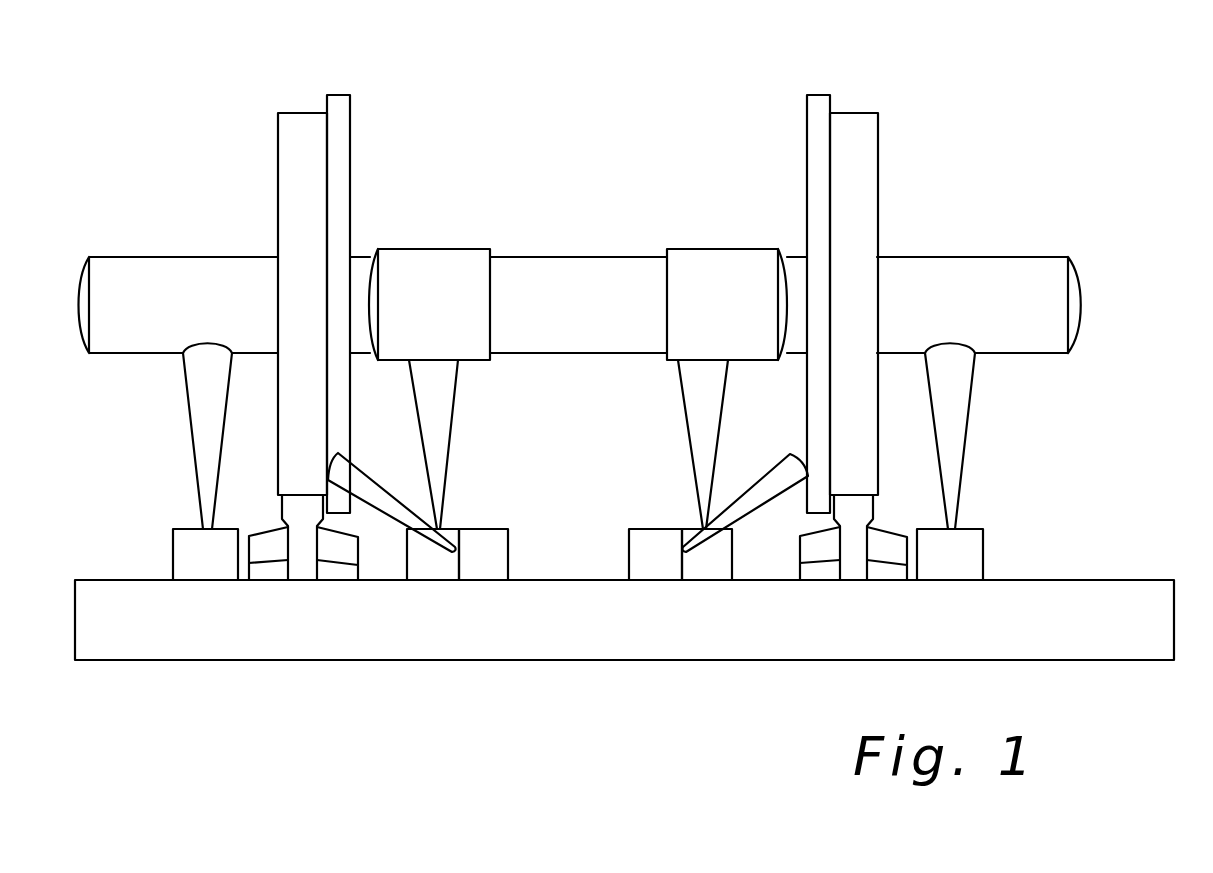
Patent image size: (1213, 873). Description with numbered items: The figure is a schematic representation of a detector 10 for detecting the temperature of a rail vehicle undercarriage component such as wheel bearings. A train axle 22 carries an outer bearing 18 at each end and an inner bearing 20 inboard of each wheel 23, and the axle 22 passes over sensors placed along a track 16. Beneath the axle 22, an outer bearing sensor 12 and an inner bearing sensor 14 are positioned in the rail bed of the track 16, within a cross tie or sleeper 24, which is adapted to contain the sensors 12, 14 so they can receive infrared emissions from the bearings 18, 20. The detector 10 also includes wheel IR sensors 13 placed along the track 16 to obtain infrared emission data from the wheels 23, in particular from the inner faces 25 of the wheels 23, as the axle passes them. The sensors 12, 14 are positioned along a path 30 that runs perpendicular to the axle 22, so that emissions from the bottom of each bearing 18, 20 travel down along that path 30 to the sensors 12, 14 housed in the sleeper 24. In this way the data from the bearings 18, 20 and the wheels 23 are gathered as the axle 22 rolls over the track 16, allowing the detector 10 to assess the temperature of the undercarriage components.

The detector 10 is at (1034, 470).
The outer bearing sensor 12 is at (172, 555).
The wheel IR sensor 13 is at (481, 562).
The inner bearing sensor 14 is at (432, 562).
The track 16 is at (573, 545).
The outer bearing 18 is at (207, 257).
The inner bearing 20 is at (438, 249).
The train axle 22 is at (560, 257).
The wheel 23 is at (305, 113).
The sleeper 24 is at (205, 661).
The inner face of wheel 25 is at (352, 400).
The path 30 is at (190, 428).